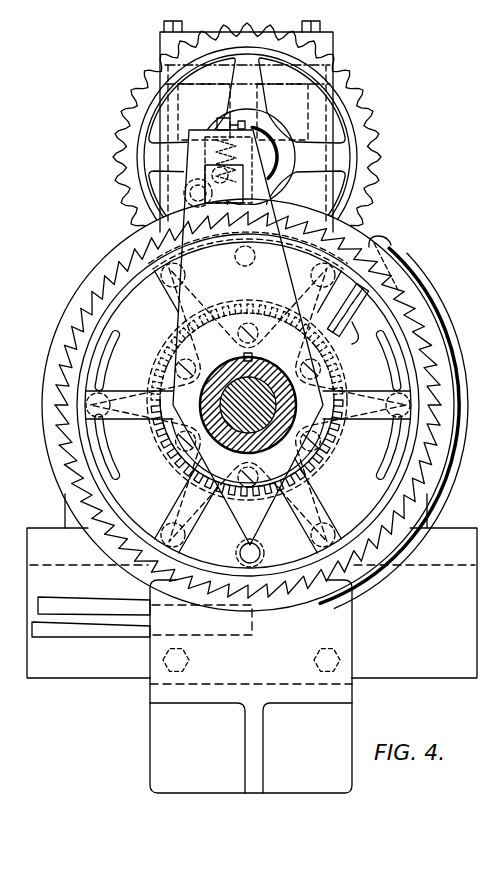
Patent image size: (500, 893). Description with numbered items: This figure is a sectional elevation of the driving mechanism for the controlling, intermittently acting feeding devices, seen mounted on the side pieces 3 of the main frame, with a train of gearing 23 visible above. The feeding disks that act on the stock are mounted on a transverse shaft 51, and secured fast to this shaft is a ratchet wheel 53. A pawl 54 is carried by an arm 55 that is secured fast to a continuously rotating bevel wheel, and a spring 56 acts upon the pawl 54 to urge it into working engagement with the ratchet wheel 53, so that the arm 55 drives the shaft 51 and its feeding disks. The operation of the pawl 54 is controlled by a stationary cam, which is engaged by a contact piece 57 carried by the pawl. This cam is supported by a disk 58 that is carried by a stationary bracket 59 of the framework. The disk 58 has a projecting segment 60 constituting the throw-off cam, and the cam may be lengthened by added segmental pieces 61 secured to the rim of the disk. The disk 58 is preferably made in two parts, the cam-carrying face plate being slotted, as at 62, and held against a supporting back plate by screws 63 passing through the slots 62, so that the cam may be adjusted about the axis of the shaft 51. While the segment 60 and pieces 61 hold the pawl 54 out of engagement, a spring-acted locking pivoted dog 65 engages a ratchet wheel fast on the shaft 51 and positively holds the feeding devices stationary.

The side pieces 3 is at (252, 603).
The train of gearing 23 is at (368, 150).
The transverse shaft 51 is at (263, 146).
The ratchet wheel 53 is at (415, 333).
The pawl 54 is at (268, 189).
The arm 55 is at (248, 387).
The spring 56 is at (215, 143).
The contact piece 57 is at (130, 214).
The disk 58 is at (68, 297).
The bracket 59 is at (251, 686).
The projecting segment 60 is at (383, 242).
The segmental pieces 61 is at (446, 452).
The slots 62 is at (97, 359).
The screws 63 is at (102, 424).
The locking pivoted dog 65 is at (94, 627).